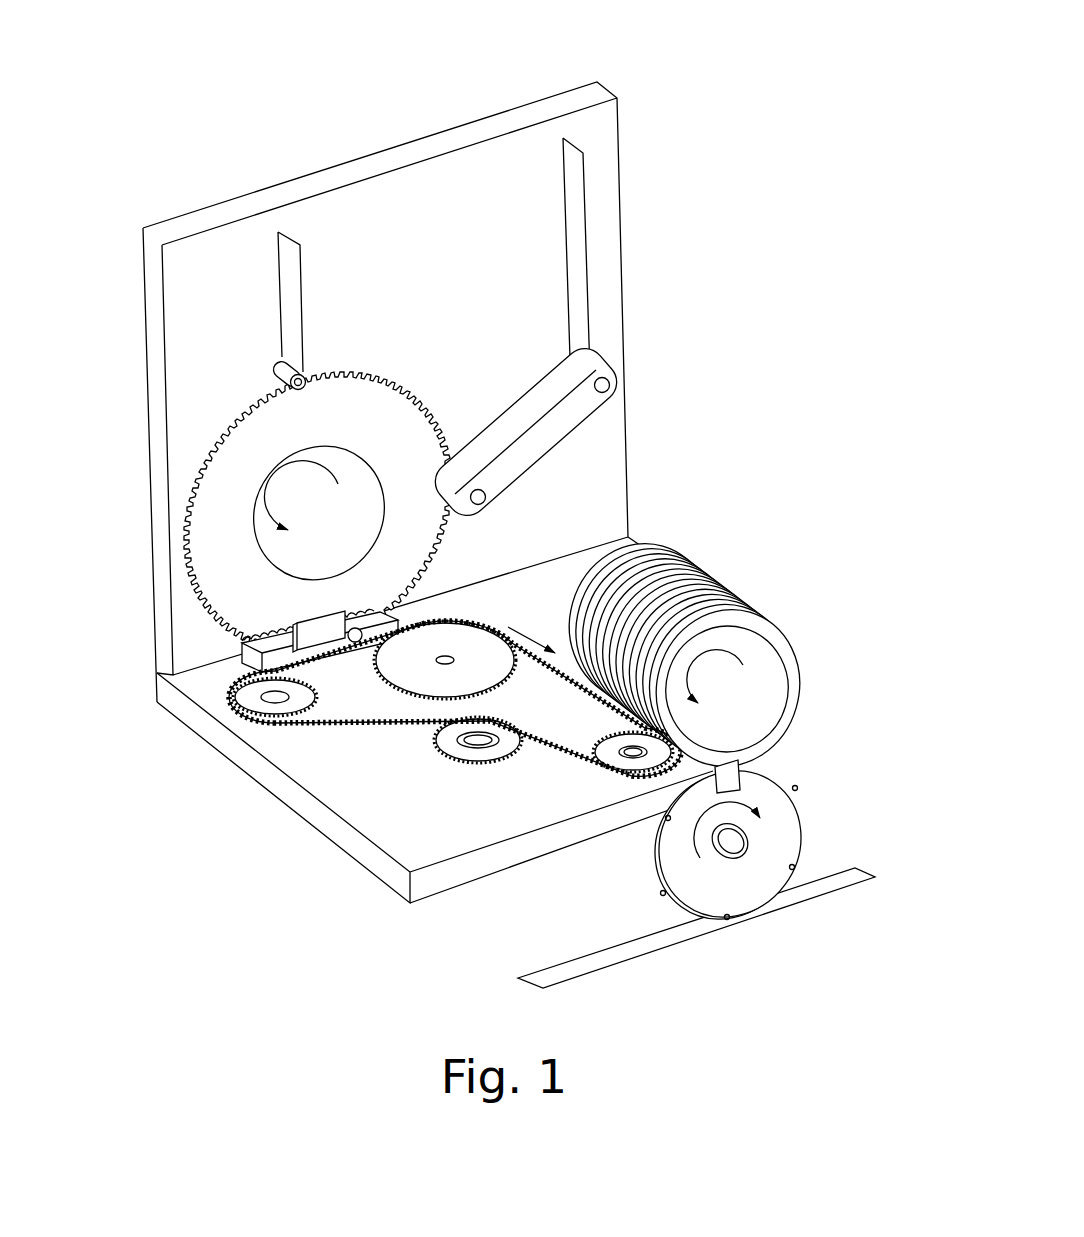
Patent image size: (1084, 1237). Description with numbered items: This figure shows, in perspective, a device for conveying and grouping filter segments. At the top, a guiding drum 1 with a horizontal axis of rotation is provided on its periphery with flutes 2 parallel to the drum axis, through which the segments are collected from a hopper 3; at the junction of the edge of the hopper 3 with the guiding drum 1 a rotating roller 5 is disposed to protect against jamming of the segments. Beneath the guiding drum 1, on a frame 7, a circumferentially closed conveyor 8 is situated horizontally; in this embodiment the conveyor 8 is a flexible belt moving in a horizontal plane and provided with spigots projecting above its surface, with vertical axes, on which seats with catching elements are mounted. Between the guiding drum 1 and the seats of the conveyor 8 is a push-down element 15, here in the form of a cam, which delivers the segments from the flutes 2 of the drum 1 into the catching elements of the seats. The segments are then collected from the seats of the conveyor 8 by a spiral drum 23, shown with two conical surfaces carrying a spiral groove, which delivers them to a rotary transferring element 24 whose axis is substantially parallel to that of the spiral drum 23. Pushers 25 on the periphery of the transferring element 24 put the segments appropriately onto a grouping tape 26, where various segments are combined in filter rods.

The guiding drum 1 is at (225, 495).
The flutes 2 is at (265, 483).
The hopper 3 is at (447, 247).
The rotating roller 5 is at (283, 370).
The frame 7 is at (363, 850).
The conveyor 8 is at (333, 728).
The push-down element 15 is at (297, 618).
The spiral drum 23 is at (462, 672).
The transferring element 24 is at (761, 808).
The pushers 25 is at (795, 788).
The grouping tape 26 is at (812, 890).